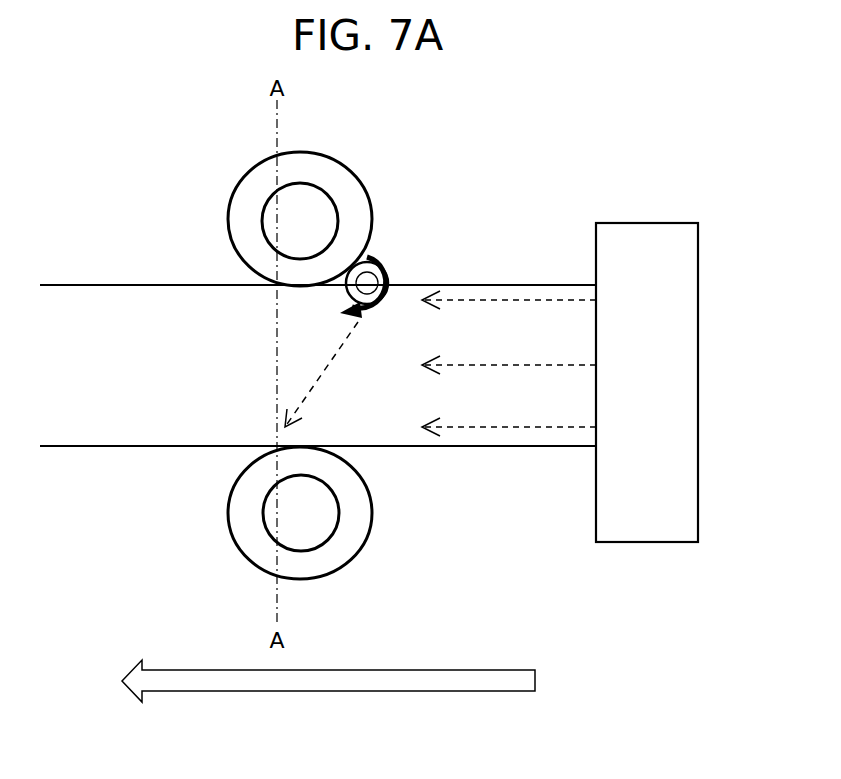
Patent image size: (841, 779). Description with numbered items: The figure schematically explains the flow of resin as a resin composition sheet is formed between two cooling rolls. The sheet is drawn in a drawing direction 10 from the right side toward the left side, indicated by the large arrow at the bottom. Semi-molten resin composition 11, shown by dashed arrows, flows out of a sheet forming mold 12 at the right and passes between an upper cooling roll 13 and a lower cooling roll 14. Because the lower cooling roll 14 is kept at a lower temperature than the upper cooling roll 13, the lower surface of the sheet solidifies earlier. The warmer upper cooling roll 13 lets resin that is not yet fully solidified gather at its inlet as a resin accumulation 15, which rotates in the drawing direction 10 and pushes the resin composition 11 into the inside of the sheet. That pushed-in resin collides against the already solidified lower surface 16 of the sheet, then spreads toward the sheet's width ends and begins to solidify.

The drawing direction 10 is at (328, 693).
The resin composition in a semi-molten state 11 is at (528, 430).
The sheet forming mold 12 is at (643, 233).
The upper cooling roll 13 is at (348, 192).
The lower cooling roll 14 is at (322, 568).
The resin accumulation 15 is at (397, 274).
The lower surface of the resin composition sheet 16 is at (270, 448).